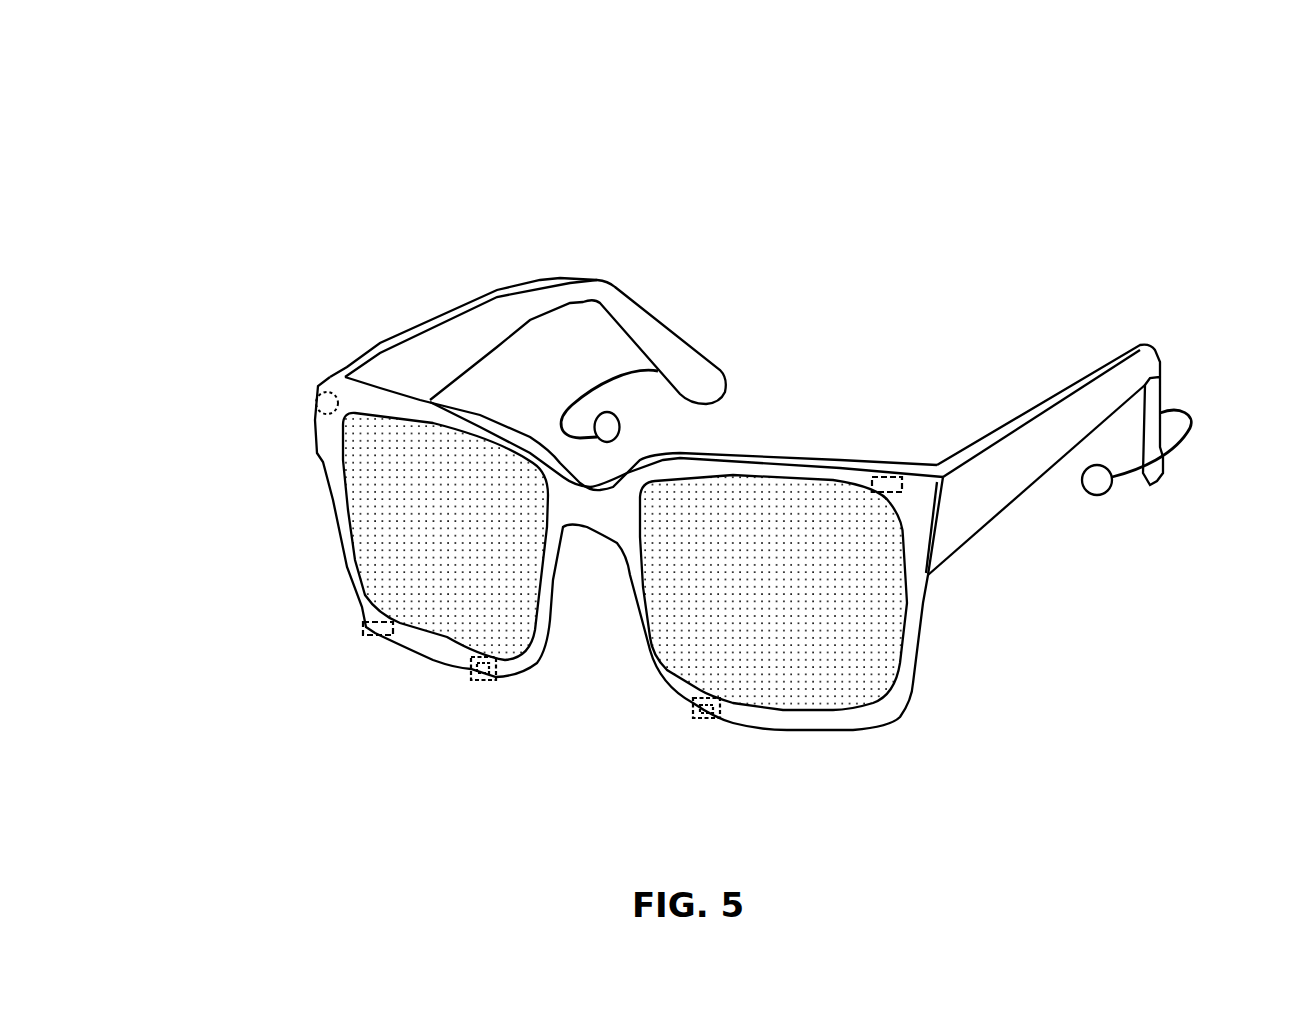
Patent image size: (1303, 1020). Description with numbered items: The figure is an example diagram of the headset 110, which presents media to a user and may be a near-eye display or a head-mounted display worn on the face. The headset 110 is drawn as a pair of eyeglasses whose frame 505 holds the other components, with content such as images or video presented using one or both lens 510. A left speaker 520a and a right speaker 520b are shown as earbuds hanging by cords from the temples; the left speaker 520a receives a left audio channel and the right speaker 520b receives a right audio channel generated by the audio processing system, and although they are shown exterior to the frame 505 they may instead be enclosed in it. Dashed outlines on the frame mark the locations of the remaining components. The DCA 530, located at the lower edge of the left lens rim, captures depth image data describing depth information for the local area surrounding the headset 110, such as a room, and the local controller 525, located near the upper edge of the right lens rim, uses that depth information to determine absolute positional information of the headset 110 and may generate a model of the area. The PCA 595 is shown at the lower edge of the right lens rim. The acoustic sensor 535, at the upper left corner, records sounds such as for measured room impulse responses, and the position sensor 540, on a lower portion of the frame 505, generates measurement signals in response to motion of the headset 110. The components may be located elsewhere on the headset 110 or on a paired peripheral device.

The headset 110 is at (289, 28).
The frame 505 is at (609, 283).
The lens 510 is at (380, 513).
The left speaker 520a is at (1097, 483).
The right speaker 520b is at (670, 384).
The local controller 525 is at (888, 477).
The DCA 530 is at (472, 670).
The acoustic sensor 535 is at (327, 403).
The position sensor 540 is at (363, 626).
The PCA 595 is at (703, 720).